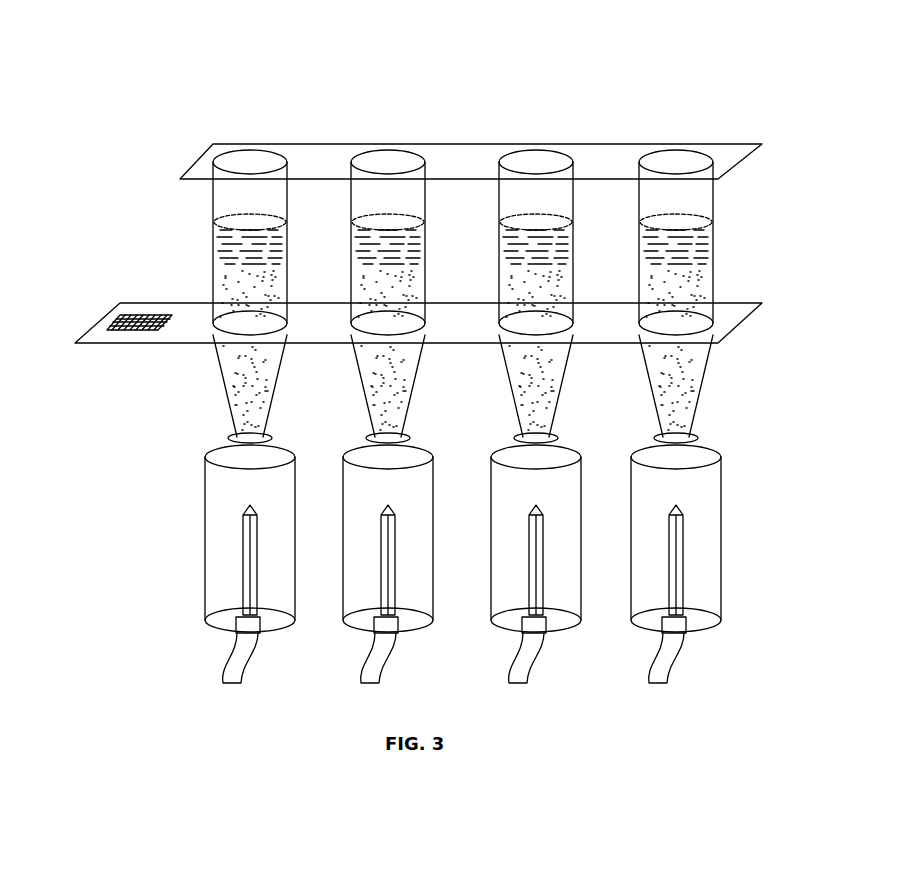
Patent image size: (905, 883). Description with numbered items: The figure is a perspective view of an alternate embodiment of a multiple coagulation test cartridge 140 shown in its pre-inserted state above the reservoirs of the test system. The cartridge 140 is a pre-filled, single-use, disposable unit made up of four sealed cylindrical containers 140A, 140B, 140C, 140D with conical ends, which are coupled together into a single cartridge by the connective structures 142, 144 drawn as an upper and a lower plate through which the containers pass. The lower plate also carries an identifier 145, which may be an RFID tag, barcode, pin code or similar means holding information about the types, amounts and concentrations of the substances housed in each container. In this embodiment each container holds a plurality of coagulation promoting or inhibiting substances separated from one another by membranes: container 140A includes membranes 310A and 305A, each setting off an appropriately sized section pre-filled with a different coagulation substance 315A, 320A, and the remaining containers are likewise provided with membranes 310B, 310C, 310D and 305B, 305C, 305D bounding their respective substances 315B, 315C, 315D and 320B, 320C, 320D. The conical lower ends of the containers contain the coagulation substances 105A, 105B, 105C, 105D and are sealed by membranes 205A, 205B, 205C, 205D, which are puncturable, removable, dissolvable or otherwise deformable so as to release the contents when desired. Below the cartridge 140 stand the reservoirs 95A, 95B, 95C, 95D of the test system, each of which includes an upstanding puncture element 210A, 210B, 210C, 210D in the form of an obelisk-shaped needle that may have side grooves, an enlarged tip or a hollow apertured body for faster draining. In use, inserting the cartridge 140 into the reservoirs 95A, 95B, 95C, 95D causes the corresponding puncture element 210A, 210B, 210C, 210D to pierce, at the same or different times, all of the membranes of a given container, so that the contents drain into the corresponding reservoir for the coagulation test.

The cartridge 140 is at (467, 88).
The connective structure 142 is at (307, 146).
The connective structure 144 is at (322, 320).
The identifier 145 is at (140, 313).
The container 140A is at (250, 242).
The container 140B is at (388, 242).
The container 140C is at (536, 242).
The container 140D is at (676, 242).
The membrane 310A is at (218, 207).
The membrane 310B is at (358, 207).
The membrane 310C is at (506, 207).
The membrane 310D is at (647, 207).
The coagulation substance 315A is at (214, 225).
The coagulation substance 315B is at (355, 225).
The coagulation substance 315C is at (502, 225).
The coagulation substance 315D is at (644, 225).
The membrane 305A is at (214, 250).
The membrane 305B is at (355, 250).
The membrane 305C is at (502, 250).
The membrane 305D is at (644, 250).
The coagulation substance 320A is at (213, 292).
The coagulation substance 320B is at (353, 292).
The coagulation substance 320C is at (501, 292).
The coagulation substance 320D is at (642, 292).
The coagulation substance 105A is at (222, 386).
The coagulation substance 105B is at (357, 386).
The coagulation substance 105C is at (505, 386).
The coagulation substance 105D is at (646, 386).
The membrane 205A is at (283, 429).
The membrane 205B is at (423, 429).
The membrane 205C is at (569, 429).
The membrane 205D is at (711, 429).
The reservoir 95A is at (227, 538).
The reservoir 95B is at (366, 538).
The reservoir 95C is at (513, 538).
The reservoir 95D is at (654, 538).
The puncture element 210A is at (206, 594).
The puncture element 210B is at (347, 594).
The puncture element 210C is at (493, 594).
The puncture element 210D is at (635, 594).